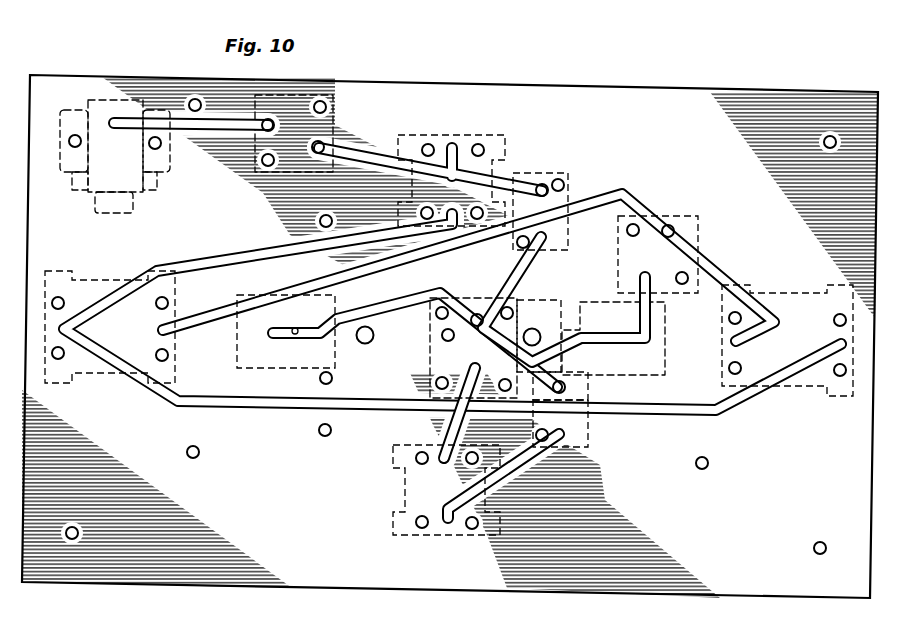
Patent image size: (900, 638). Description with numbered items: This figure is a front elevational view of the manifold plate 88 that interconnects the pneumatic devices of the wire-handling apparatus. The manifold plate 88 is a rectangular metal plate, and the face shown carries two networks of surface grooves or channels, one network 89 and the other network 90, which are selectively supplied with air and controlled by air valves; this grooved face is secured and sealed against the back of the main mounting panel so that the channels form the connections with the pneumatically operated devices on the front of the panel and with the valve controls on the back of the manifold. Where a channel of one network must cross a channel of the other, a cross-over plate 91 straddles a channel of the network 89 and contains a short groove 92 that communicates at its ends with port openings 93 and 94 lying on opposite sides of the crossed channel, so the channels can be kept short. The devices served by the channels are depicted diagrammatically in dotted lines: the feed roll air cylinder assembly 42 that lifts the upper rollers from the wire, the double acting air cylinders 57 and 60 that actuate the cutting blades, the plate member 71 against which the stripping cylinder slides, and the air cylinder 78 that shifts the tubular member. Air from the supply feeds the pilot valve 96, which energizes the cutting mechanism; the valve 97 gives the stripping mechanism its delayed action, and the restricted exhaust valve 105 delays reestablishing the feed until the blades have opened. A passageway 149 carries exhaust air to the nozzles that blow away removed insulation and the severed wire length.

The air cylinder assembly 42 is at (160, 184).
The double acting air cylinder 57 is at (398, 185).
The double acting air cylinder 60 is at (395, 488).
The plate member 71 is at (341, 296).
The air cylinder 78 is at (99, 272).
The manifold plate 88 is at (772, 496).
The network of surface grooves or channels 89 is at (256, 407).
The network of surface grooves or channels 90 is at (622, 345).
The cross-over plate 91 is at (577, 173).
The short groove 92 is at (592, 394).
The port opening 93 is at (562, 380).
The port opening 94 is at (575, 436).
The pilot valve 96 is at (425, 357).
The valve 97 is at (702, 232).
The restricted exhaust valve 105 is at (336, 126).
The passageway 149 is at (442, 335).